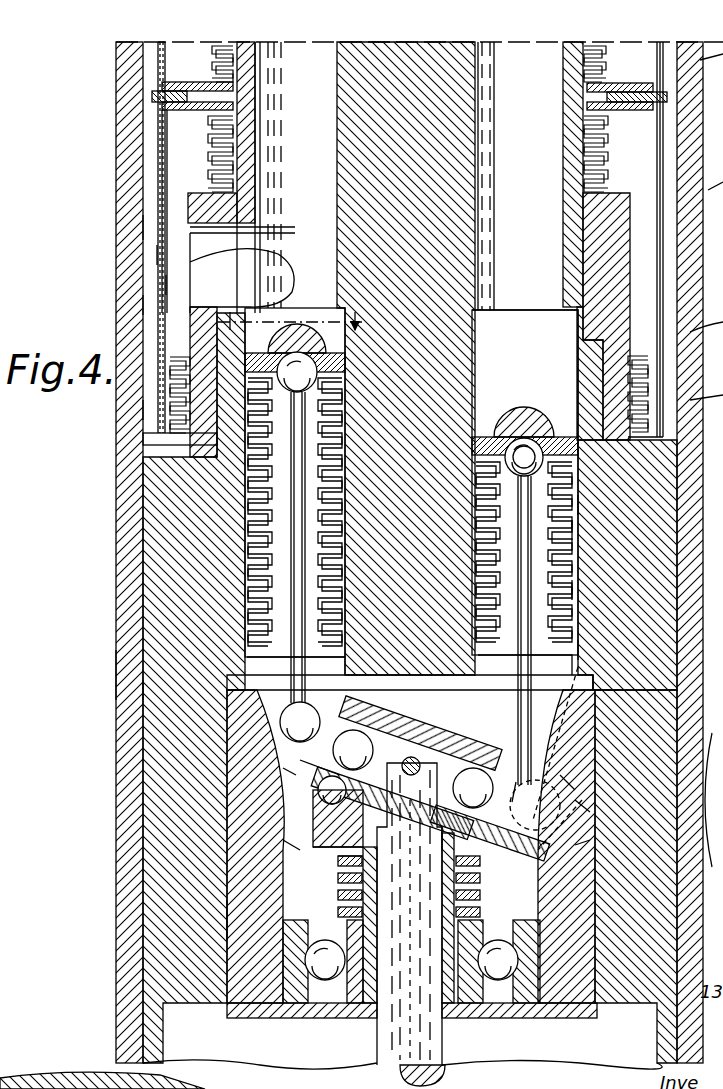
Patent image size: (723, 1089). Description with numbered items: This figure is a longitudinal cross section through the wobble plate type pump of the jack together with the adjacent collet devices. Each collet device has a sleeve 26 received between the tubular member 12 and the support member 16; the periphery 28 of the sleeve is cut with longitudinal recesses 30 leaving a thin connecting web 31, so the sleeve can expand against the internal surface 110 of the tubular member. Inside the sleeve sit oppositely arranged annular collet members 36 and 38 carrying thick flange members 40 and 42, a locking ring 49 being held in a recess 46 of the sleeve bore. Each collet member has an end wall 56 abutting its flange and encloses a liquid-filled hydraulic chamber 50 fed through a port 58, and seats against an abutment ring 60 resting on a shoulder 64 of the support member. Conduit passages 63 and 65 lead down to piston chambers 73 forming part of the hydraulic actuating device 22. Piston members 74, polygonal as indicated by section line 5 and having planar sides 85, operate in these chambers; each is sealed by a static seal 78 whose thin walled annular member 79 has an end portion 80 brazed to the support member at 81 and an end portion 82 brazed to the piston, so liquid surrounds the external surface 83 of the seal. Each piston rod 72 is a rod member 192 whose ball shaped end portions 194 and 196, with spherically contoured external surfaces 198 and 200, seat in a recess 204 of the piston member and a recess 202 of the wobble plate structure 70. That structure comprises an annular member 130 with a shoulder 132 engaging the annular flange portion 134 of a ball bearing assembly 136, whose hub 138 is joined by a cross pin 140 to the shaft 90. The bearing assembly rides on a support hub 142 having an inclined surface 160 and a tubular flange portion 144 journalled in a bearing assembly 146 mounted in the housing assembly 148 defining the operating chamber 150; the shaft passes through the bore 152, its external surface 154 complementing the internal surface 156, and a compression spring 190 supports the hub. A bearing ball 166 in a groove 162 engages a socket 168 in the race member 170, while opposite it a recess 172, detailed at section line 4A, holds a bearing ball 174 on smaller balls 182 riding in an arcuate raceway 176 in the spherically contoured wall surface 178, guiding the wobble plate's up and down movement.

The support member 16 is at (140, 652).
The tubular member 12 is at (124, 682).
The hydraulic actuating device 22 is at (186, 695).
The sleeve 26 is at (140, 410).
The periphery 28 is at (143, 228).
The internal surface 110 is at (150, 256).
The connecting web 31 is at (164, 283).
The recesses 30 is at (150, 302).
The collet member 36 is at (156, 186).
The collet member 38 is at (156, 56).
The flange member 42 is at (195, 78).
The recess 46 is at (162, 96).
The retainer 49 is at (152, 98).
The flange member 40 is at (185, 110).
The end wall 56 is at (257, 136).
The hydraulic chamber 50 is at (182, 332).
The port 58 is at (242, 276).
The abutment ring 60 is at (200, 440).
The shoulder 64 is at (186, 497).
The conduit passage 63 is at (336, 84).
The conduit passage 65 is at (488, 70).
The piston chamber 73 is at (336, 322).
The section line 5 is at (292, 324).
The piston rod 72 is at (290, 576).
The piston member 74 is at (336, 372).
The ball shaped end portion 194 is at (288, 364).
The spherically contoured recess 204 is at (516, 446).
The external surface 198 is at (524, 446).
The rod member 192 is at (518, 520).
The end portion 82 is at (582, 464).
The static seal 78 is at (574, 506).
The external surface 83 is at (570, 532).
The thin walled annular member 79 is at (572, 590).
The end portion 80 is at (582, 652).
The brazed connection 81 is at (594, 668).
The arcuate raceway 176 is at (598, 692).
The race member 170 is at (592, 732).
The ball shaped end portion 196 is at (570, 760).
The smaller bearing balls 182 is at (566, 784).
The bearing ball 174 is at (590, 804).
The wobble plate structure 70 is at (276, 800).
The external surface 200 is at (280, 724).
The hub 138 is at (406, 712).
The ball bearing assembly 136 is at (458, 740).
The annular flange portion 134 is at (350, 730).
The shoulder 132 is at (334, 700).
The spherically contoured socket 168 is at (378, 712).
The cross pin 140 is at (414, 758).
The annular member 130 is at (250, 762).
The wall surface 178 is at (298, 770).
The bearing ball 166 is at (306, 820).
The wobble plate operating chamber 150 is at (280, 842).
The support hub 142 is at (310, 855).
The compression spring 190 is at (338, 868).
The housing assembly 148 is at (240, 925).
The tubular flange portion 144 is at (338, 905).
The inclined surface 160 is at (482, 918).
The bearing assembly 146 is at (280, 1003).
The internal surface 156 is at (380, 1012).
The external surface 154 is at (380, 1040).
The spherically contoured recess 202 is at (556, 845).
The recess 172 is at (440, 846).
The ball bearing receiving groove 162 is at (409, 914).
The bore 152 is at (403, 930).
The shaft 90 is at (440, 1050).
The section 4A is at (567, 761).
The planar sides 85 is at (102, 1069).